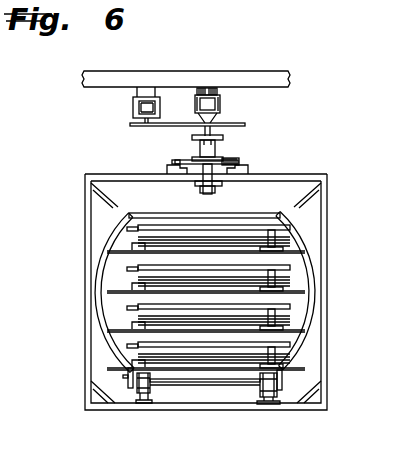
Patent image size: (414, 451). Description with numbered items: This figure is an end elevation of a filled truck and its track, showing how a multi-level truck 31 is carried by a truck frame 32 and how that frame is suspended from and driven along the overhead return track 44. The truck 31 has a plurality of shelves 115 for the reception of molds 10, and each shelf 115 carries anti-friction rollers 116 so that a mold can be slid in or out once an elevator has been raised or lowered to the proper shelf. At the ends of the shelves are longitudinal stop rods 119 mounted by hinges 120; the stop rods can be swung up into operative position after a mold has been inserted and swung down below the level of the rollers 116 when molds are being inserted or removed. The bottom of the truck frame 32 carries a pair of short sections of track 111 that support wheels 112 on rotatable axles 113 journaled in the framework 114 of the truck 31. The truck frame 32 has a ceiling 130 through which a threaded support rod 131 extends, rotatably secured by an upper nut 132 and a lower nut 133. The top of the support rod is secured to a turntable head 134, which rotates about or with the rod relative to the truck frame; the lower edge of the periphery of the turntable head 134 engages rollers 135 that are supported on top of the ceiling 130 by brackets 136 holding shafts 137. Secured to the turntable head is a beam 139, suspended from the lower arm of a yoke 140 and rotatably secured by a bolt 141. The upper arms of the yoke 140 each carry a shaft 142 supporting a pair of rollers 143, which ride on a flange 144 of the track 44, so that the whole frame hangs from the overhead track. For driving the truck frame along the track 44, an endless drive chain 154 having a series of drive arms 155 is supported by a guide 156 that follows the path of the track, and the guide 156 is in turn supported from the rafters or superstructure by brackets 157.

The mold 10 is at (253, 228).
The multi-level truck 31 is at (314, 300).
The truck frame 32 is at (327, 196).
The return track 44 is at (212, 88).
The track section 111 is at (143, 403).
The wheel 112 is at (150, 392).
The axle 113 is at (198, 383).
The framework 114 is at (128, 372).
The shelf 115 is at (232, 297).
The anti-friction roller 116 is at (256, 376).
The stop rod 119 is at (285, 242).
The hinge 120 is at (128, 256).
The ceiling 130 is at (88, 177).
The threaded support rod 131 is at (214, 188).
The upper nut 132 is at (198, 183).
The lower nut 133 is at (205, 193).
The turntable head 134 is at (208, 148).
The roller 135 is at (240, 160).
The bracket 136 is at (249, 170).
The shaft 137 is at (166, 170).
The beam 139 is at (224, 140).
The yoke 140 is at (216, 120).
The bolt 141 is at (212, 127).
The shaft 142 is at (195, 100).
The roller 143 is at (197, 88).
The flange 144 is at (203, 117).
The endless drive chain 154 is at (116, 108).
The drive arm 155 is at (132, 125).
The guide 156 is at (139, 108).
The bracket 157 is at (142, 87).